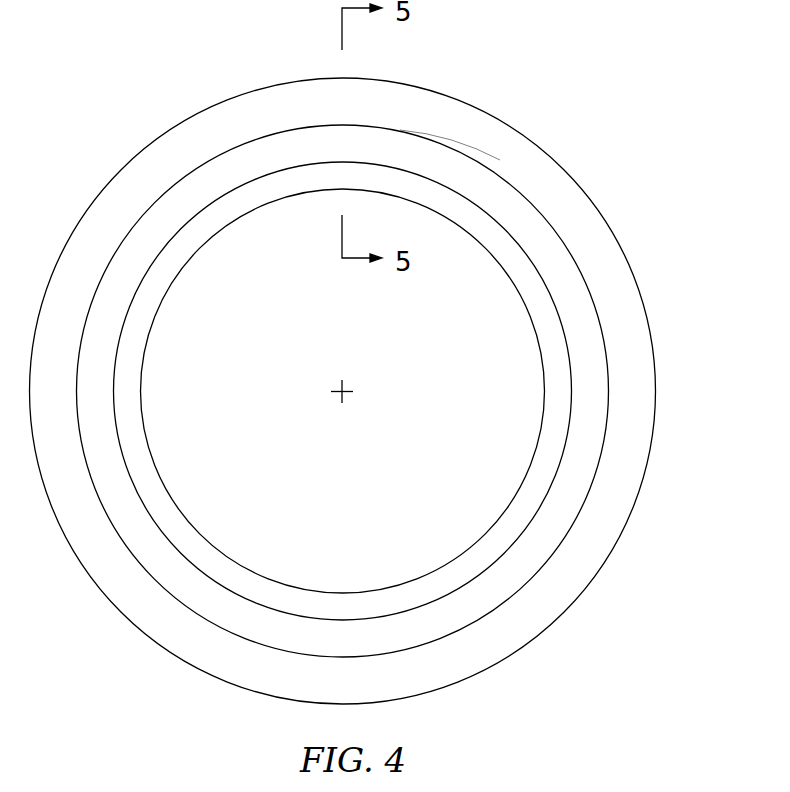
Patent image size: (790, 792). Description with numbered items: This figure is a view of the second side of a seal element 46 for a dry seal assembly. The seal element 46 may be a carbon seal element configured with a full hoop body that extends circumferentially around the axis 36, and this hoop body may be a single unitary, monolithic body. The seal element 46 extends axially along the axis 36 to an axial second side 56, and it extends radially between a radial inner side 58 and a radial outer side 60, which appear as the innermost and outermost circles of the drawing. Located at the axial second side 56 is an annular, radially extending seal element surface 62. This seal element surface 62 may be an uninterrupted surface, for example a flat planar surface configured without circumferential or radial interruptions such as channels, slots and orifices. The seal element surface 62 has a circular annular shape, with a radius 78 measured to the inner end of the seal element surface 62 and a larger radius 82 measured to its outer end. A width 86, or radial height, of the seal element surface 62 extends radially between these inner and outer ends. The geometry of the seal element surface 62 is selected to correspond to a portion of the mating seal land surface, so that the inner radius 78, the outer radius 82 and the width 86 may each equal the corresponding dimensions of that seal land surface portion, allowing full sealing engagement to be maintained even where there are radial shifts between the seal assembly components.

The axis 36 is at (341, 392).
The seal element 46 is at (578, 80).
The axial second side 56 is at (600, 351).
The radial inner side 58 is at (232, 222).
The radial outer side 60 is at (213, 103).
The seal element surface 62 is at (580, 444).
The radius of inner end of seal element surface 78 is at (342, 392).
The radius of outer end of seal element surface 82 is at (342, 392).
The width of seal element surface 86 is at (453, 132).